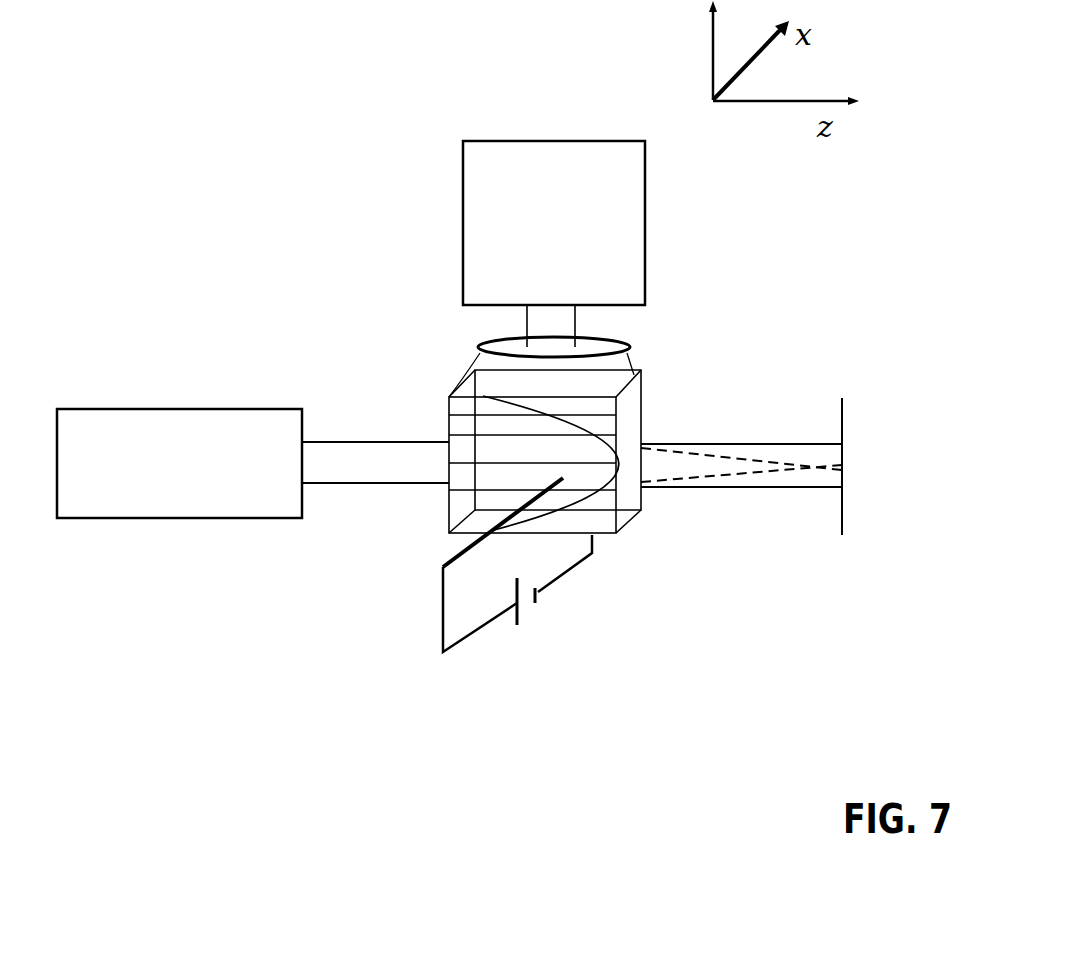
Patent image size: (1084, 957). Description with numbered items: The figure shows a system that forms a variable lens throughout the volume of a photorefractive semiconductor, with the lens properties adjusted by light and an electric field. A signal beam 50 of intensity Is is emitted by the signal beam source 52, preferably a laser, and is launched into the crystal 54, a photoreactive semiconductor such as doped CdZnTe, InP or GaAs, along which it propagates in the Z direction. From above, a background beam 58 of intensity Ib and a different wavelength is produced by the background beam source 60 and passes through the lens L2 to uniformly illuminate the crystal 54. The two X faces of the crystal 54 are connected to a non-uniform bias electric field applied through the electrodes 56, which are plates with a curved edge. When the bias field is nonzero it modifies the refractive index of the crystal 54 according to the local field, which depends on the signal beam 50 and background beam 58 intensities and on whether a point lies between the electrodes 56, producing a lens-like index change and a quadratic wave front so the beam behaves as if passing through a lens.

The signal beam 50 is at (398, 428).
The signal beam source 52 is at (233, 403).
The crystal 54 is at (447, 497).
The electrodes 56 is at (607, 540).
The background beam 58 is at (575, 325).
The background beam source 60 is at (652, 210).
The lens L2 is at (477, 348).